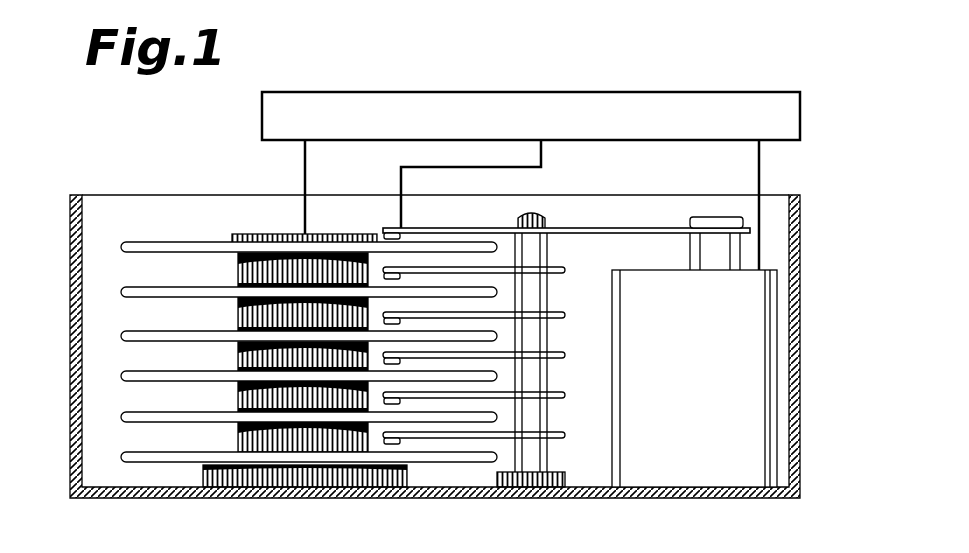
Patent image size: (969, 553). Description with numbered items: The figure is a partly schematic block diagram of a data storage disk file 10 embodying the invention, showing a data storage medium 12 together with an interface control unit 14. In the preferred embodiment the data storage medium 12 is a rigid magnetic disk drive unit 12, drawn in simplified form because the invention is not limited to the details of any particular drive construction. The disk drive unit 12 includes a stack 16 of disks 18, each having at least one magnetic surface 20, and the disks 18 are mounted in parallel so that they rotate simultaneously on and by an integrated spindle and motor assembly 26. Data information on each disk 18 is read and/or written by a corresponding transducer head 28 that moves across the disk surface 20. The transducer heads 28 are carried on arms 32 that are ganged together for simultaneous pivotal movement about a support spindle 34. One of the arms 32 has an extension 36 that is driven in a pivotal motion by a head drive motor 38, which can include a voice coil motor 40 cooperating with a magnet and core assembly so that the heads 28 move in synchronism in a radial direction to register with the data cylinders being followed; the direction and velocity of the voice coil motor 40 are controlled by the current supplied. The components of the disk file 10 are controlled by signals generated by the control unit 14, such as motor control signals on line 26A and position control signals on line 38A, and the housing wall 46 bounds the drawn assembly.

The data storage disk file 10 is at (832, 124).
The data storage medium 12 is at (218, 188).
The interface control unit 14 is at (585, 92).
The stack 16 is at (188, 228).
The disks 18 is at (122, 336).
The magnetic surface 20 is at (133, 242).
The integrated spindle and motor assembly 26 is at (296, 430).
The line 26A is at (305, 168).
The transducer head 28 is at (393, 230).
The arms 32 is at (557, 271).
The support spindle 34 is at (548, 452).
The extension 36 is at (600, 228).
The head drive motor 38 is at (748, 306).
The line 38A is at (761, 162).
The voice coil motor 40 is at (715, 217).
The housing wall 46 is at (800, 414).